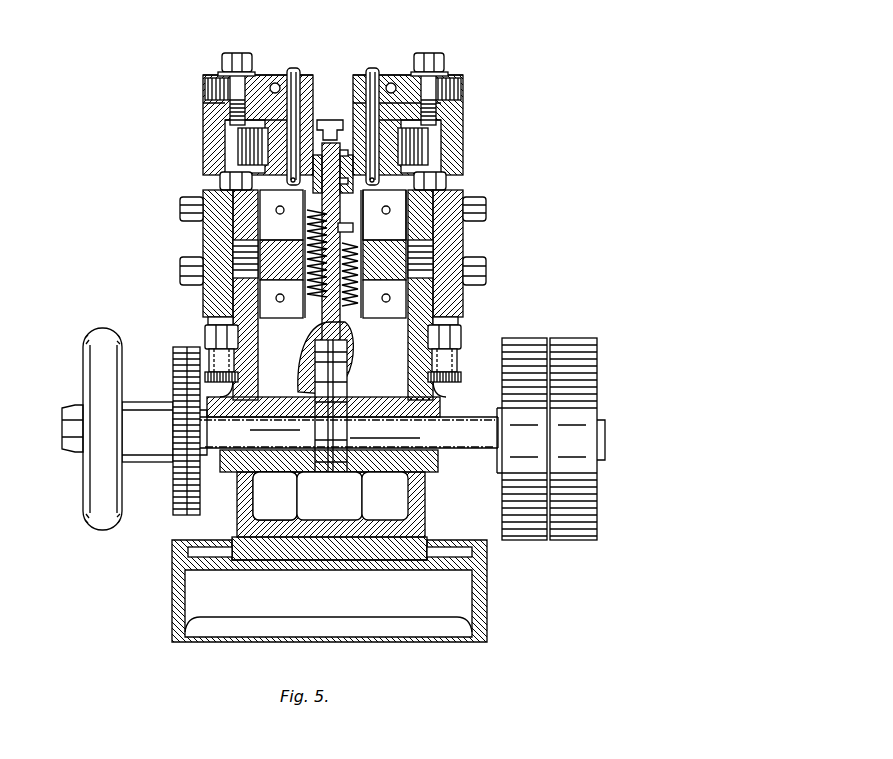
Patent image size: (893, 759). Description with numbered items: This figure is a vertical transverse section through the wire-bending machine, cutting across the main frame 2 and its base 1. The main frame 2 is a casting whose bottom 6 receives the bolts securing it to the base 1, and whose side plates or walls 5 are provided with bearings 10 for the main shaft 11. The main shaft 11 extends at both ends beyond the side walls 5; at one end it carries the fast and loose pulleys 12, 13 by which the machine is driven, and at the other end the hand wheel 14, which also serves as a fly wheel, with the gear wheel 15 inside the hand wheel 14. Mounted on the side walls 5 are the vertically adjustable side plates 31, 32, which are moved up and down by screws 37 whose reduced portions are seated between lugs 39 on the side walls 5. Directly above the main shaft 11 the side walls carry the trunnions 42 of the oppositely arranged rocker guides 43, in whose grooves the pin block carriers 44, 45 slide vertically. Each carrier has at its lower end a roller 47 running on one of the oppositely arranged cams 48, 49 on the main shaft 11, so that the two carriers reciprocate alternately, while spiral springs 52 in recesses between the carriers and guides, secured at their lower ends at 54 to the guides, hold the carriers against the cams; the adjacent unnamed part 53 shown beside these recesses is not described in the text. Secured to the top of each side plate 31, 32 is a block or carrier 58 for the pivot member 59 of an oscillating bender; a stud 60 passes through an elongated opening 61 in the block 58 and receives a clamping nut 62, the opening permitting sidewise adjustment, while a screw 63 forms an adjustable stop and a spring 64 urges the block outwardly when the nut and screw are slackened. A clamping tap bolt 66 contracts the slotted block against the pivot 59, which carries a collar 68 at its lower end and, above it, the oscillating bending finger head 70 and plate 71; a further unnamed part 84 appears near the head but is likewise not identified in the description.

The base 1 is at (329, 591).
The main frame 2 is at (427, 498).
The side plates or walls 5 is at (258, 372).
The bottom 6 is at (180, 260).
The bearings 10 is at (270, 397).
The main shaft 11 is at (462, 422).
The fast pulley 12 is at (577, 439).
The loose pulley 13 is at (522, 439).
The hand wheel 14 is at (92, 429).
The gear wheel 15 is at (180, 483).
The side plate 31 is at (218, 240).
The side plate 32 is at (450, 240).
The screws 37 is at (210, 321).
The lugs 39 is at (210, 352).
The trunnions 42 is at (266, 240).
The rocker guides 43 is at (278, 328).
The pin block carrier 44 is at (348, 158).
The pin block carrier 45 is at (334, 254).
The roller 47 is at (315, 350).
The cam 48 is at (318, 478).
The cam 49 is at (333, 492).
The spiral springs 52 is at (353, 230).
The opening 53 is at (334, 215).
The spring securing point 54 is at (347, 330).
The block or carrier 58 is at (315, 76).
The pivot member 59 is at (294, 68).
The stud 60 is at (246, 56).
The elongated opening 61 is at (205, 75).
The clamping nut 62 is at (232, 54).
The screw 63 is at (200, 90).
The spring 64 is at (262, 80).
The clamping tap bolt 66 is at (277, 84).
The collar 68 is at (220, 181).
The bending finger head 70 is at (342, 148).
The plate 71 is at (320, 120).
The pin 84 is at (350, 173).